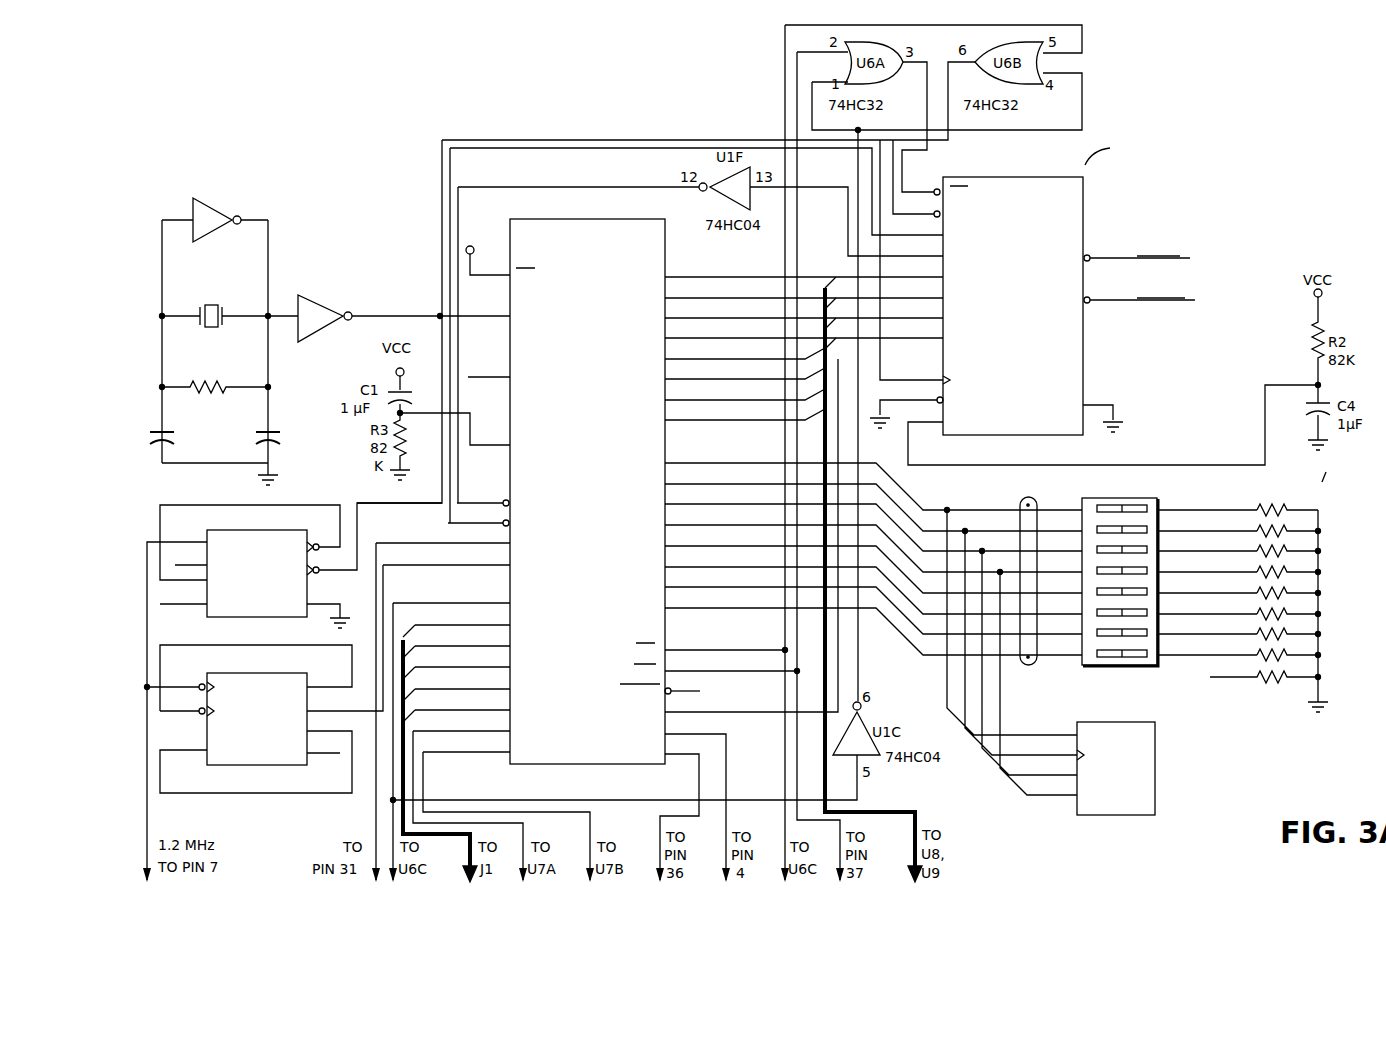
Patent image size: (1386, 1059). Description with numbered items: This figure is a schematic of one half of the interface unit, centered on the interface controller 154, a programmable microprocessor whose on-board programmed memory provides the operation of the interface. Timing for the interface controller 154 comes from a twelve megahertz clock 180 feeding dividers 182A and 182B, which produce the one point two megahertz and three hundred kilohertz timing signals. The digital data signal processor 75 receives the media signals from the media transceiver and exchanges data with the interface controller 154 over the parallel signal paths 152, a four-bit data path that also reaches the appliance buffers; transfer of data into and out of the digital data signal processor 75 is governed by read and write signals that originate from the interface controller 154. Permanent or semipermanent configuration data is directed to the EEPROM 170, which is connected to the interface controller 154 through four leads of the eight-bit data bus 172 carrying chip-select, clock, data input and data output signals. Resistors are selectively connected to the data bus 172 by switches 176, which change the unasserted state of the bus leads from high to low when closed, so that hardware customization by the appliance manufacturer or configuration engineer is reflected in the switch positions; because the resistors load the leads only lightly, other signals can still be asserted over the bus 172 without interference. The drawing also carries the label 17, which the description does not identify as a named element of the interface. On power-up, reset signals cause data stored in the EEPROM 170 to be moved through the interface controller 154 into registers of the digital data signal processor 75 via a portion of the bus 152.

The 12 MHz clock 180 is at (233, 199).
The divider 182A is at (259, 530).
The divider 182B is at (277, 673).
The interface controller 154 is at (575, 219).
The digital data signal processor 75 is at (1085, 205).
The eight-bit data bus 172 is at (1022, 500).
The switches 176 is at (1139, 497).
The resistor network 17 is at (1269, 692).
The electrically erasable programmable read only memory (EEPROM) 170 is at (1155, 763).
The parallel signal paths 152 is at (866, 813).